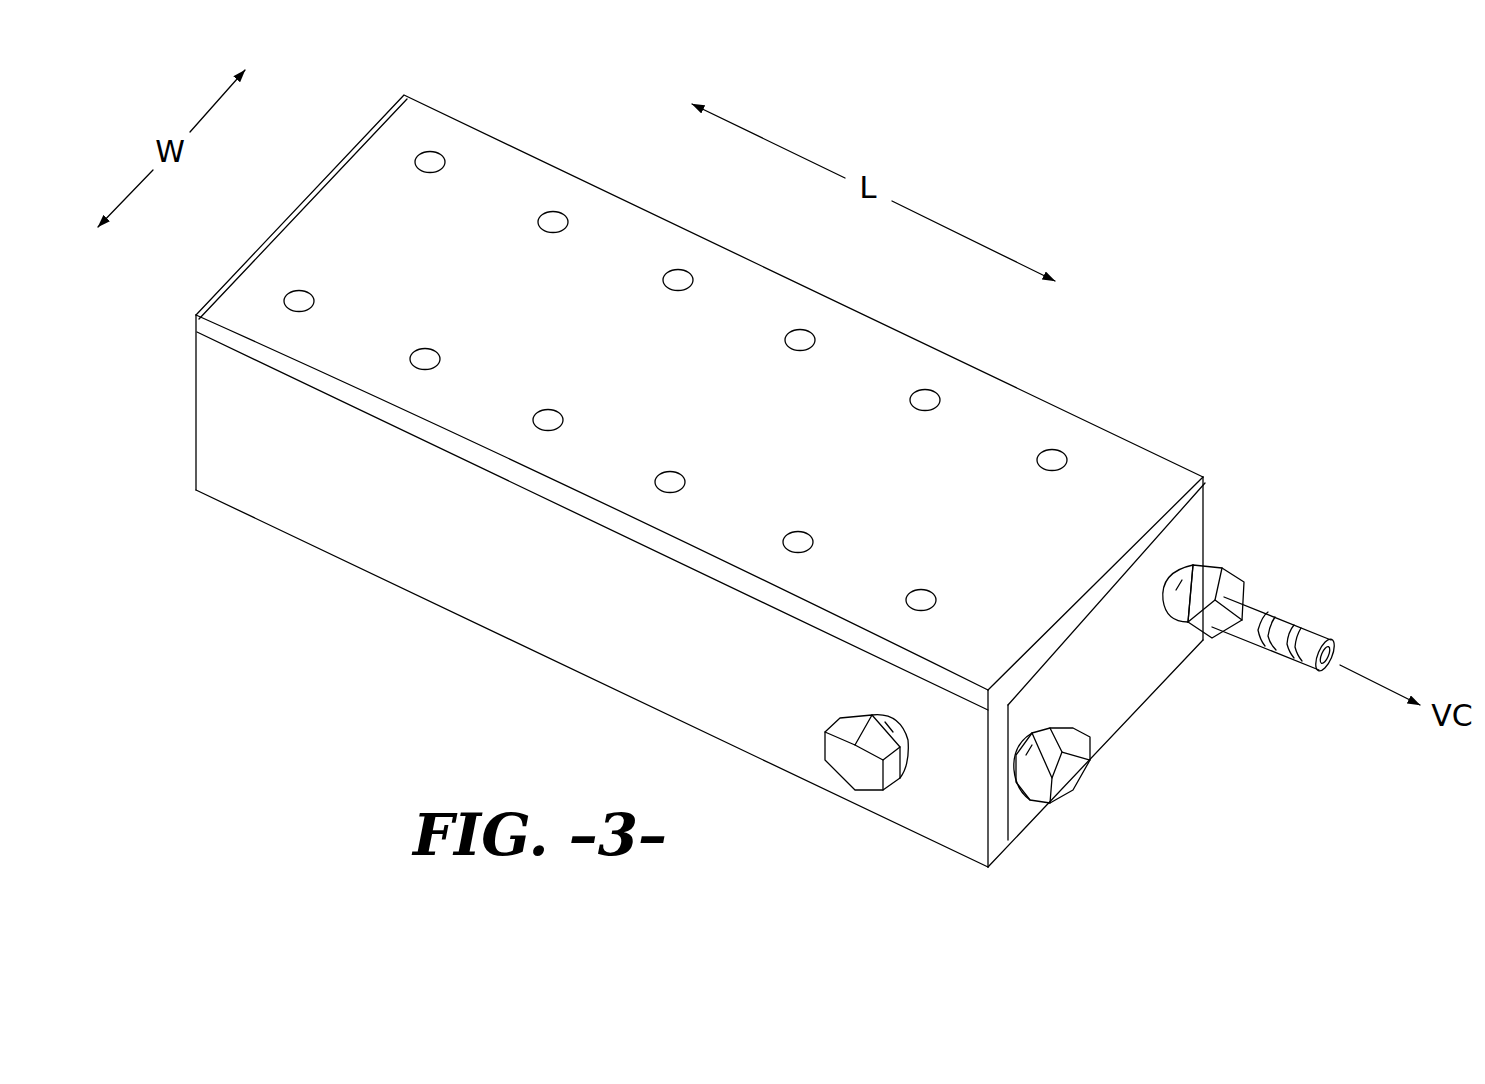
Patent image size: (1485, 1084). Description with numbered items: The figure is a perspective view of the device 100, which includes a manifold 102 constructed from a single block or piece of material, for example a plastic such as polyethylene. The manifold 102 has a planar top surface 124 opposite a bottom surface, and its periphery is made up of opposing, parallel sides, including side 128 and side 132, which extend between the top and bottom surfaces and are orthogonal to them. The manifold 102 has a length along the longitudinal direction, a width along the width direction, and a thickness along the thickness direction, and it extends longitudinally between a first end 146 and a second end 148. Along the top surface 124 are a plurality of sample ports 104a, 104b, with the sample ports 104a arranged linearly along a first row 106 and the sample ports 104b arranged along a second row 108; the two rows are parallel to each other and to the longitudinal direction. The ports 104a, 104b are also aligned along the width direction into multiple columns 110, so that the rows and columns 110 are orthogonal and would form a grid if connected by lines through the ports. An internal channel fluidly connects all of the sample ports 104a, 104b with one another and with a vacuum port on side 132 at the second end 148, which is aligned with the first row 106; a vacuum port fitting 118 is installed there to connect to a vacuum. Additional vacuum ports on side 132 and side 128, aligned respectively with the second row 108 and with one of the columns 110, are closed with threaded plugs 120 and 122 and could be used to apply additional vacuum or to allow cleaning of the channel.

The device 100 is at (1216, 302).
The manifold 102 is at (343, 210).
The sample ports 104a is at (447, 173).
The sample ports 104b is at (437, 352).
The first row 106 is at (1078, 472).
The second row 108 is at (952, 612).
The columns 110 is at (447, 148).
The vacuum port fitting 118 is at (1217, 573).
The plug 120 is at (1070, 778).
The plug 122 is at (858, 765).
The top surface 124 is at (995, 415).
The side 128 is at (228, 435).
The side 132 is at (1122, 670).
The first end 146 is at (193, 497).
The second end 148 is at (972, 878).